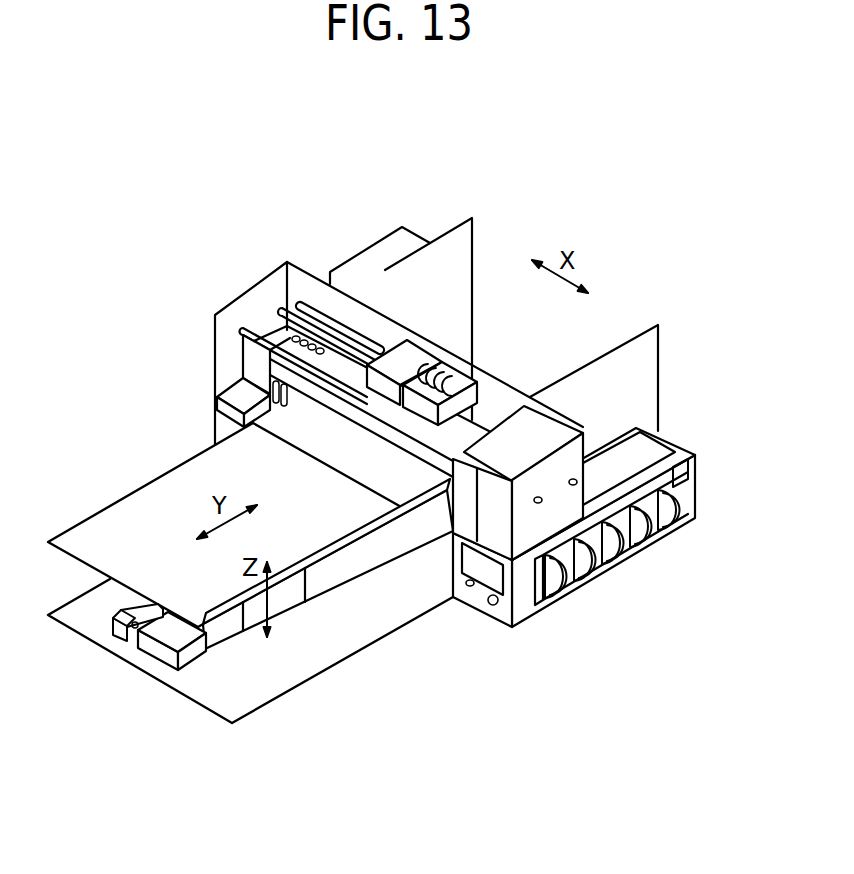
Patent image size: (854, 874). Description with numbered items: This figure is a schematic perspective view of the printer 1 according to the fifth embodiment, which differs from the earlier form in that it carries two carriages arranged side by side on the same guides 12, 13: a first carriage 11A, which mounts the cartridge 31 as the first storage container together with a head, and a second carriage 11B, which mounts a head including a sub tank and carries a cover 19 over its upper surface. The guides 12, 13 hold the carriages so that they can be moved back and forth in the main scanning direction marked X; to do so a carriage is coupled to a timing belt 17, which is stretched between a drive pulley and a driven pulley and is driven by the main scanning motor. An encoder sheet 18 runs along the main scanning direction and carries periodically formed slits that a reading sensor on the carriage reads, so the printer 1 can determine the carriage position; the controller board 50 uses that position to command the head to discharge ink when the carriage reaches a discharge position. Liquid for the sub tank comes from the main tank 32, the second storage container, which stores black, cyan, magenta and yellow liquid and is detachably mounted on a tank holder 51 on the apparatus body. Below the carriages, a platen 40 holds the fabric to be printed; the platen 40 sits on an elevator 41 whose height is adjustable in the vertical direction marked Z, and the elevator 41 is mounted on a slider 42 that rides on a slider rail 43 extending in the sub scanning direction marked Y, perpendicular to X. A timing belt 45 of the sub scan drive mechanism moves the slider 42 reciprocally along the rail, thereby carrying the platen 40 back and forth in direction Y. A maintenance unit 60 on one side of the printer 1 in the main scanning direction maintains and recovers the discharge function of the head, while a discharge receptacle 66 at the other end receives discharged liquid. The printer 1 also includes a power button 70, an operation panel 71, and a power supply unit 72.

The printer 1 is at (297, 182).
The first carriage 11A is at (464, 407).
The second carriage 11B is at (424, 358).
The guide 12 is at (272, 330).
The guide 13 is at (236, 322).
The timing belt 17 is at (336, 322).
The encoder sheet 18 is at (306, 322).
The cover 19 is at (446, 300).
The cartridge 31 is at (455, 382).
The main tank 32 is at (686, 514).
The platen 40 is at (130, 508).
The elevator 41 is at (282, 593).
The slider 42 is at (225, 633).
The slider rail 43 is at (158, 648).
The timing belt 45 is at (113, 620).
The controller board 50 is at (657, 455).
The tank holder 51 is at (690, 480).
The maintenance unit 60 is at (528, 466).
The discharge receptacle 66 is at (254, 322).
The power button 70 is at (493, 606).
The operation panel 71 is at (487, 577).
The power supply unit 72 is at (410, 348).